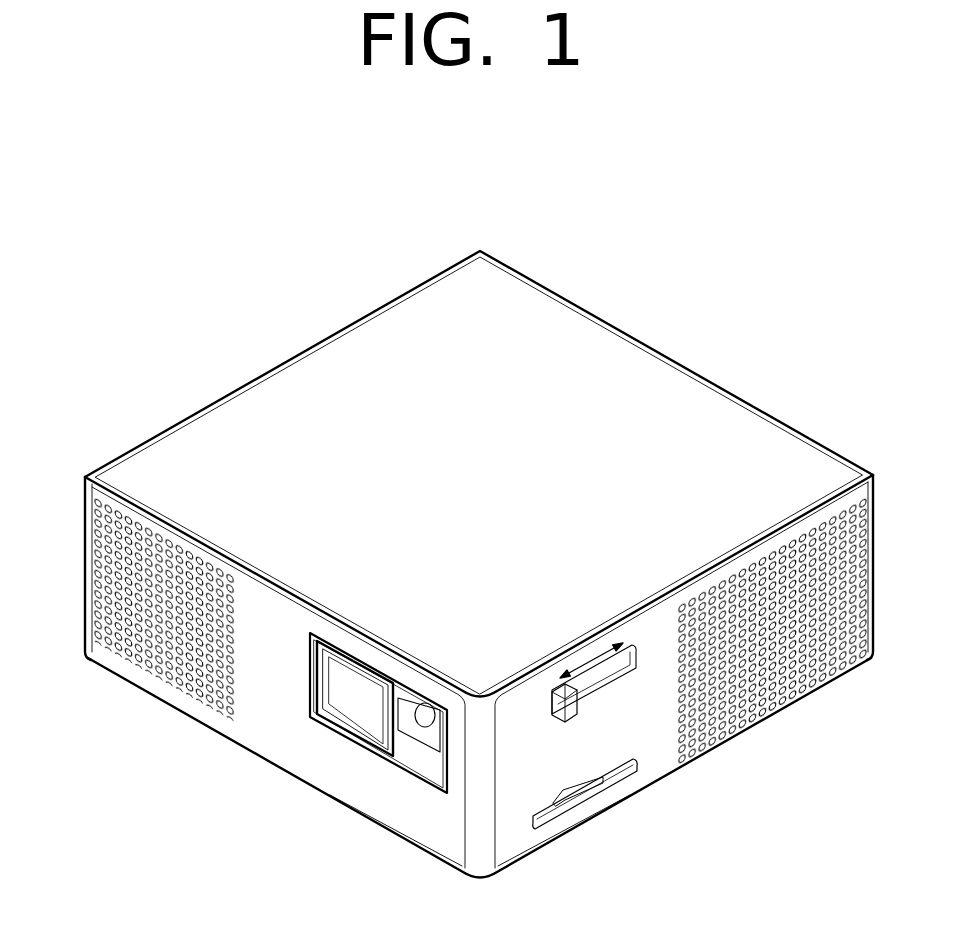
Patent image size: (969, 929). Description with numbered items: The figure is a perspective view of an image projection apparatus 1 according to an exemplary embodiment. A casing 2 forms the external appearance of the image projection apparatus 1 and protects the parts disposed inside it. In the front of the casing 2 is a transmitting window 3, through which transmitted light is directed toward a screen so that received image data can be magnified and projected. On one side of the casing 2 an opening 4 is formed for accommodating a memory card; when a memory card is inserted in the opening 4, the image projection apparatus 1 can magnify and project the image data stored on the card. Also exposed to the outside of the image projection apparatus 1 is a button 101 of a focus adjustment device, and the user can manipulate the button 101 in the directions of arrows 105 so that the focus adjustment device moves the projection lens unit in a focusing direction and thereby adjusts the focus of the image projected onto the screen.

The image projection apparatus 1 is at (362, 190).
The casing 2 is at (680, 363).
The transmitting window 3 is at (365, 705).
The opening 4 is at (563, 810).
The button 101 is at (572, 705).
The arrows 105 is at (592, 658).